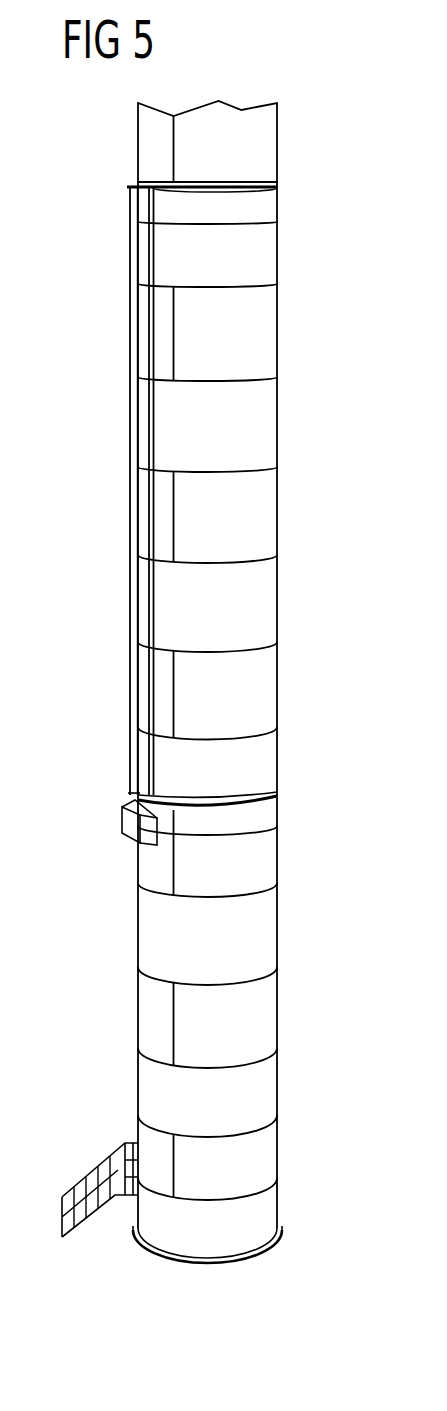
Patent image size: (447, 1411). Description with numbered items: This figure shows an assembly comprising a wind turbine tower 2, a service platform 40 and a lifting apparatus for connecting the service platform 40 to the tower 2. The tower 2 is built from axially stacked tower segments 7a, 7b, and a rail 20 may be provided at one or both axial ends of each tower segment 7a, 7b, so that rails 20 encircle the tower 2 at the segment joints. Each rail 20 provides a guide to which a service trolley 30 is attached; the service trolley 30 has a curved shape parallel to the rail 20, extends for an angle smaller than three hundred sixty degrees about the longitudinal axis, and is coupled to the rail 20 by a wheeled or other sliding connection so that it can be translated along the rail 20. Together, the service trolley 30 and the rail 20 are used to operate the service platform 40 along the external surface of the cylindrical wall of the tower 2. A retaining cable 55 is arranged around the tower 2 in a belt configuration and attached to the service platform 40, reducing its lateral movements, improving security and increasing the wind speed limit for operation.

The tower 2 is at (277, 417).
The tower segment 7a is at (265, 930).
The tower segment 7b is at (265, 608).
The rail 20 is at (277, 186).
The service trolley 30 is at (153, 195).
The service platform 40 is at (133, 825).
The retaining cable 55 is at (258, 837).